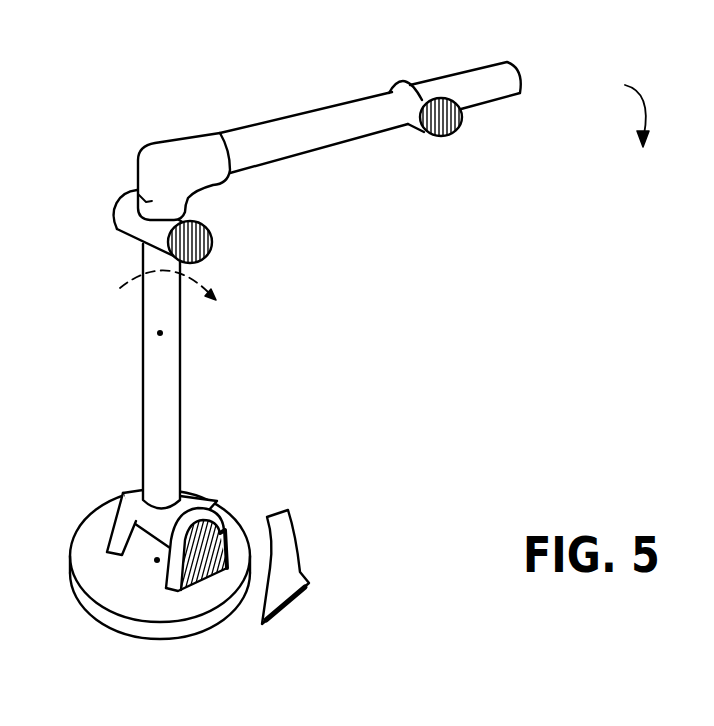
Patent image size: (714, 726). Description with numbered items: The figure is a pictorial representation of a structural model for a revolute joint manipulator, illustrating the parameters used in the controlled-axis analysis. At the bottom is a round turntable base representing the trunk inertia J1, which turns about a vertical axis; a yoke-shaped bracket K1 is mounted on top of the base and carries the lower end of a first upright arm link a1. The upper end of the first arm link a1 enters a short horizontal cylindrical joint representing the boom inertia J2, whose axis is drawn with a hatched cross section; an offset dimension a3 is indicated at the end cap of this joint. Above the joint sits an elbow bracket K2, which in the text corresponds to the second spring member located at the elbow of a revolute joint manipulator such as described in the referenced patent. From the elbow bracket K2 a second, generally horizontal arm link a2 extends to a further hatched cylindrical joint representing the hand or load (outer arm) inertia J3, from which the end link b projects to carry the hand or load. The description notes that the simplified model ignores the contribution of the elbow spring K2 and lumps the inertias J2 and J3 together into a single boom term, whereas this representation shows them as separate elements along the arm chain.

The trunk inertia J1 is at (88, 563).
The first bracket (yoke) K1 is at (212, 515).
The first arm link a1 is at (175, 412).
The boom inertia J2 is at (182, 357).
The offset link a3 is at (117, 233).
The second spring member K2 is at (168, 180).
The second arm link a2 is at (303, 143).
The hand or load (outer arm) inertia J3 is at (267, 140).
The end link b is at (476, 84).